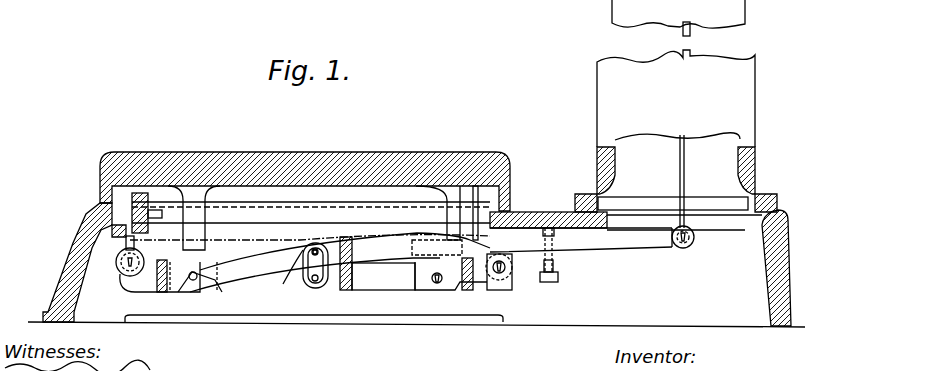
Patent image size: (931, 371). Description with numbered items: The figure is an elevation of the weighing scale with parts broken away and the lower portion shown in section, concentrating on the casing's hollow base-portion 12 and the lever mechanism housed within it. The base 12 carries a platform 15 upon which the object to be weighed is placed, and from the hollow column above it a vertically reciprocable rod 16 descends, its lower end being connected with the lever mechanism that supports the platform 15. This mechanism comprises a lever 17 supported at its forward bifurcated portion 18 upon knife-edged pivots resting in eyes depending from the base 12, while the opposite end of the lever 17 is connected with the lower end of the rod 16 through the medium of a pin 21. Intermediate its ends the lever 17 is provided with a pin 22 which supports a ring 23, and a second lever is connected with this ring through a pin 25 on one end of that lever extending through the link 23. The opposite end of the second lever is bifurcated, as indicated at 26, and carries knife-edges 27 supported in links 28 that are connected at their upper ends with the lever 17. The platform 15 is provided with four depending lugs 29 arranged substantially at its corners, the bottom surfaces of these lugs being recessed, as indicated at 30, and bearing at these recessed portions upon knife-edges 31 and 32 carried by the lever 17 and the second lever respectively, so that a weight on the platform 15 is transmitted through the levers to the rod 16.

The hollow base-portion 12 is at (527, 211).
The platform 15 is at (339, 152).
The vertically reciprocable rod 16 is at (680, 55).
The lever 17 is at (594, 262).
The forward bifurcated portion 18 is at (310, 262).
The pin 21 is at (687, 252).
The pin 22 is at (316, 246).
The ring 23 is at (300, 272).
The pin 25 is at (318, 289).
The bifurcated end 26 is at (373, 278).
The knife-edges 27 is at (503, 283).
The links 28 is at (512, 258).
The lugs 29 is at (195, 212).
The recessed portions 30 is at (152, 290).
The knife-edge 31 is at (200, 280).
The knife-edge 32 is at (433, 285).